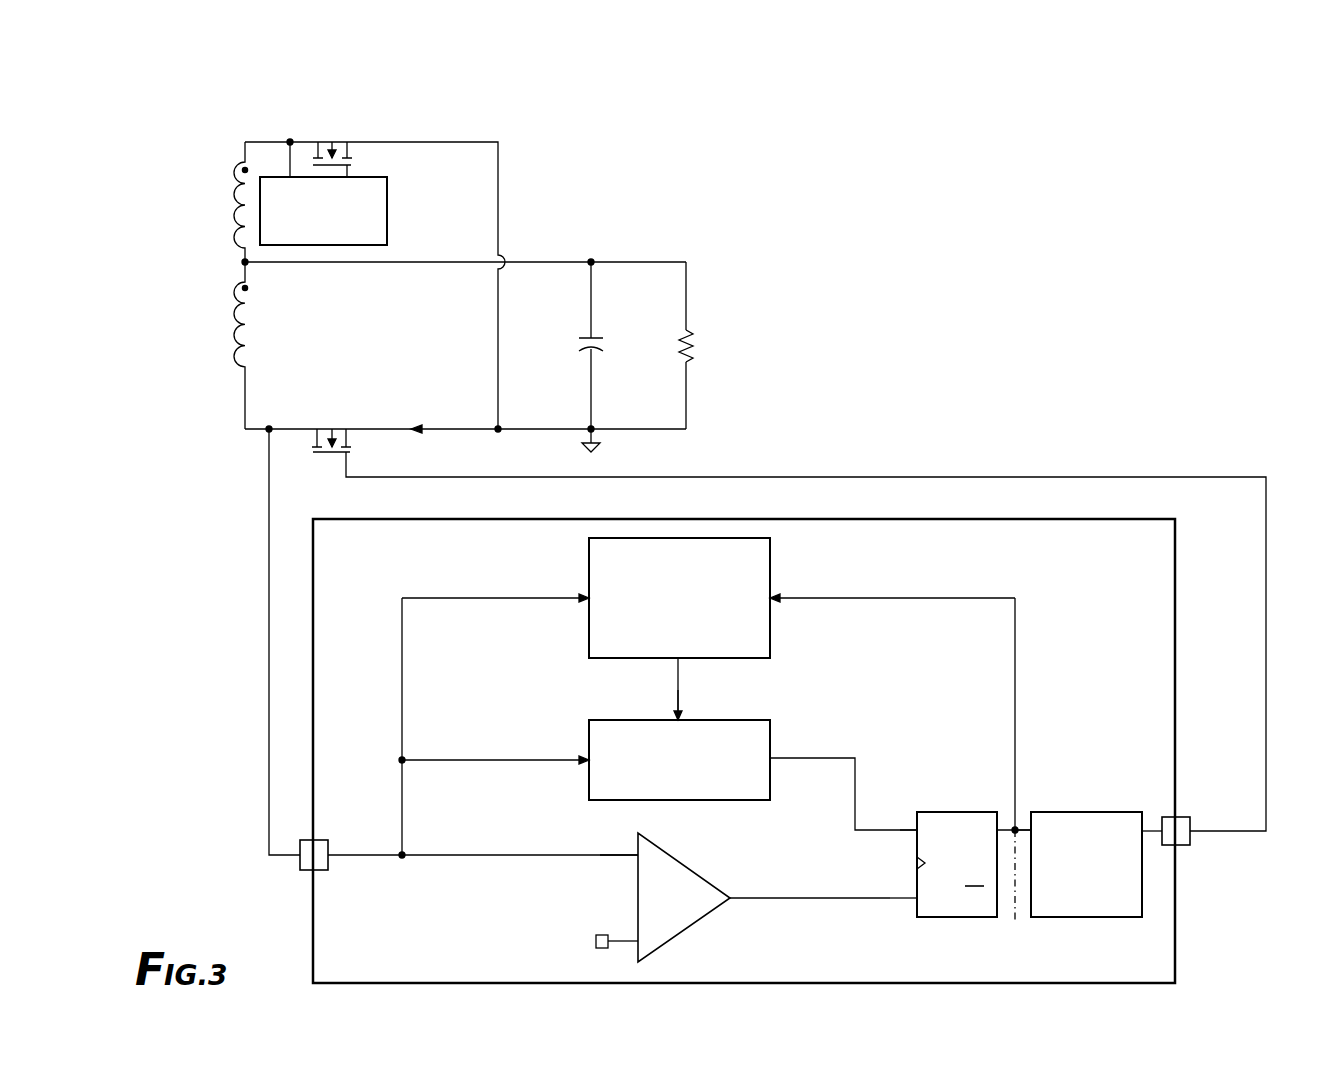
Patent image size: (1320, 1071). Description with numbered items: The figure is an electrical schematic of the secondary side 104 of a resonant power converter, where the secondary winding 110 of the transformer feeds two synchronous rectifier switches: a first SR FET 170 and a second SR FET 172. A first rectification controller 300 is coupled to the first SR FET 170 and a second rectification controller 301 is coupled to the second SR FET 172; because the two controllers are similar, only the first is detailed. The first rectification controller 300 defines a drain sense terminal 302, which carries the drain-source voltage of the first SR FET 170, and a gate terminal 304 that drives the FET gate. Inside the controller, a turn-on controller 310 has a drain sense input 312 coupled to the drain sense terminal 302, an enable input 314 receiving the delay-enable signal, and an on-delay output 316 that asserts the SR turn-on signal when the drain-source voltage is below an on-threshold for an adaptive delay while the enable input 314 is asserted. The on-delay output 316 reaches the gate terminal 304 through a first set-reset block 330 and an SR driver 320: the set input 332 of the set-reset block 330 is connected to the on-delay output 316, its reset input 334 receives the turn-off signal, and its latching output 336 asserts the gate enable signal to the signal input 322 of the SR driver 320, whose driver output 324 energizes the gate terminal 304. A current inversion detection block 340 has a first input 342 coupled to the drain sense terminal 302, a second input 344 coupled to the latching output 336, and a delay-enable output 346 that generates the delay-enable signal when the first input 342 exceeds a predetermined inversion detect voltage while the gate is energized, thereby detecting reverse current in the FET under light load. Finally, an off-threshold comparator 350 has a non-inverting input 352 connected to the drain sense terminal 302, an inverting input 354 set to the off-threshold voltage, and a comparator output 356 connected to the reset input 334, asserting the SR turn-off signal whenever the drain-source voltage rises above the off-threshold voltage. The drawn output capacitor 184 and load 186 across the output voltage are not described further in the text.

The secondary side 104 is at (238, 126).
The secondary winding 110 is at (238, 165).
The second SR FET 172 is at (338, 141).
The second rectification controller 301 is at (388, 212).
The output capacitor 184 is at (585, 338).
The load 186 is at (693, 338).
The first SR FET 170 is at (335, 424).
The first rectification controller 300 is at (1176, 566).
The drain sense terminal 302 is at (300, 868).
The gate terminal 304 is at (1191, 842).
The current inversion detection block 340 is at (771, 566).
The first input 342 is at (585, 597).
The second input 344 is at (771, 606).
The delay-enable output 346 is at (680, 662).
The turn-on controller 310 is at (612, 718).
The drain sense input 312 is at (584, 758).
The enable input 314 is at (676, 710).
The on-delay output 316 is at (771, 758).
The first set-reset block 330 is at (945, 811).
The set input 332 is at (915, 828).
The reset input 334 is at (917, 903).
The latching output 336 is at (1012, 826).
The SR driver 320 is at (1095, 811).
The signal input 322 is at (1022, 826).
The driver output 324 is at (1146, 830).
The off-threshold comparator 350 is at (697, 873).
The non-inverting input 352 is at (636, 843).
The inverting input 354 is at (636, 920).
The comparator output 356 is at (732, 900).